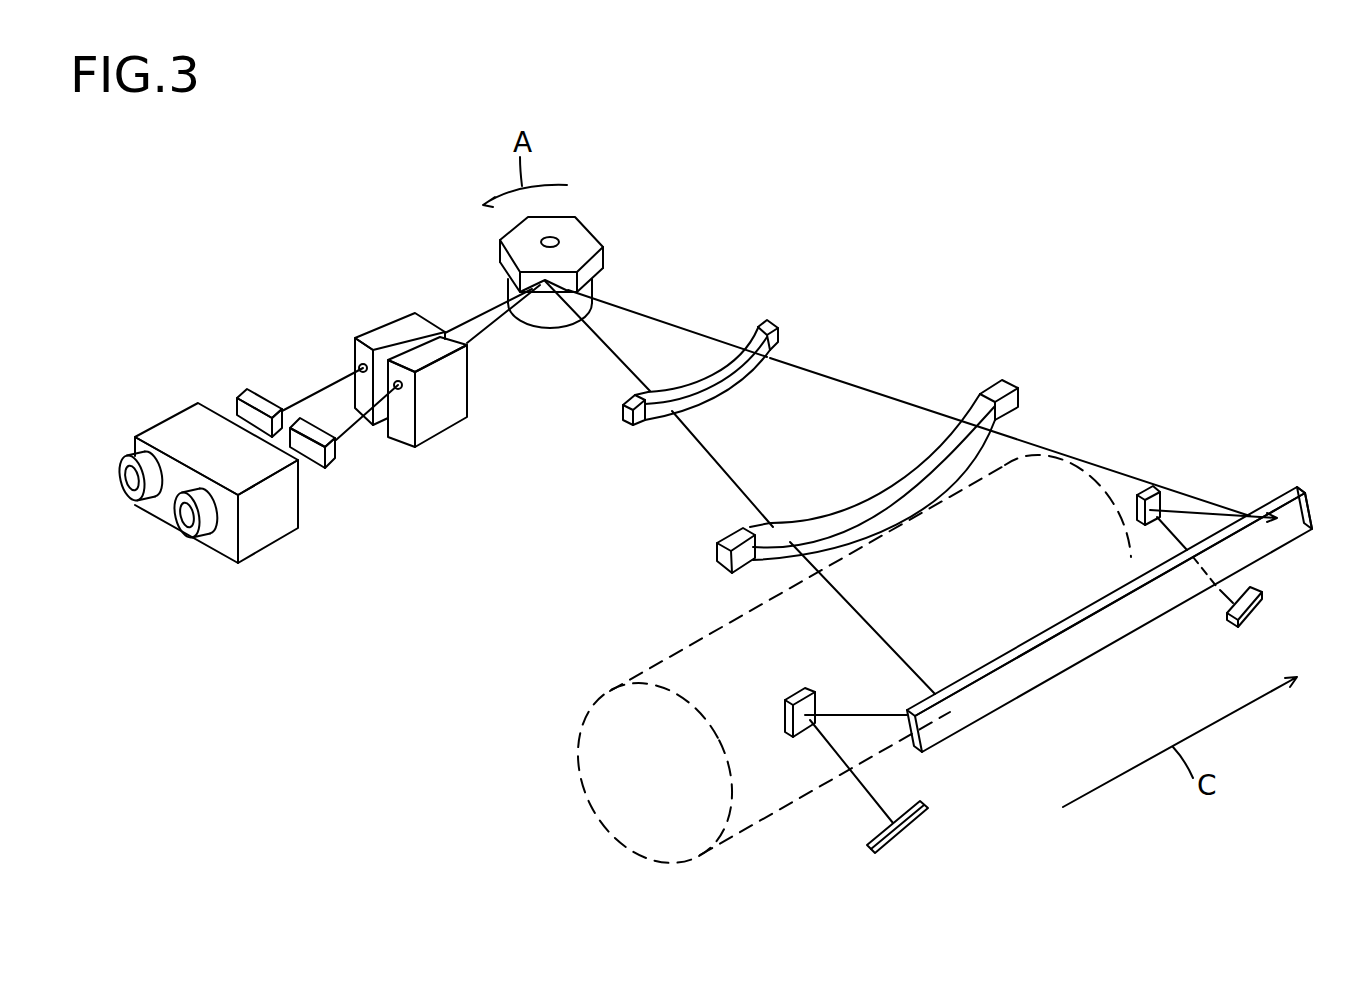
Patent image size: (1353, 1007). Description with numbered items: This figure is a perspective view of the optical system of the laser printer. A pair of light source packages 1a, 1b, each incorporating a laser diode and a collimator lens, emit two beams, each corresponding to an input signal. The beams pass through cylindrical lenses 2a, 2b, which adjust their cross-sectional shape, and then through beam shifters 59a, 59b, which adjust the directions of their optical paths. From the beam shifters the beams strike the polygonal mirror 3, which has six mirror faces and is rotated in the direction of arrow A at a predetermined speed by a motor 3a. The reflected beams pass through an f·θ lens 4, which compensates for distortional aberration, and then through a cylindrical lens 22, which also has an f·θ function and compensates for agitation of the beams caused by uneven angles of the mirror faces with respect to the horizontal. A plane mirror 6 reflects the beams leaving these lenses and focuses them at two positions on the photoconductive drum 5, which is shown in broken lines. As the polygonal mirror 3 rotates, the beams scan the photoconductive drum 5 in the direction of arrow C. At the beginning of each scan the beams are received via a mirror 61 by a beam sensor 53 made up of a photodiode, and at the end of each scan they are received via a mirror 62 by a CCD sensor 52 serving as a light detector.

The light source package 1a is at (167, 418).
The light source package 1b is at (282, 514).
The cylindrical lens 2a is at (255, 393).
The cylindrical lens 2b is at (333, 457).
The beam shifter 59a is at (383, 331).
The beam shifter 59b is at (443, 392).
The polygonal mirror 3 is at (578, 233).
The motor 3a is at (590, 287).
The f·θ lens 4 is at (760, 328).
The cylindrical lens 22 is at (989, 393).
The photoconductive drum 5 is at (605, 725).
The plane mirror 6 is at (1113, 627).
The mirror 61 is at (790, 737).
The mirror 62 is at (1150, 488).
The CCD sensor 52 is at (1243, 612).
The beam sensor 53 is at (913, 823).